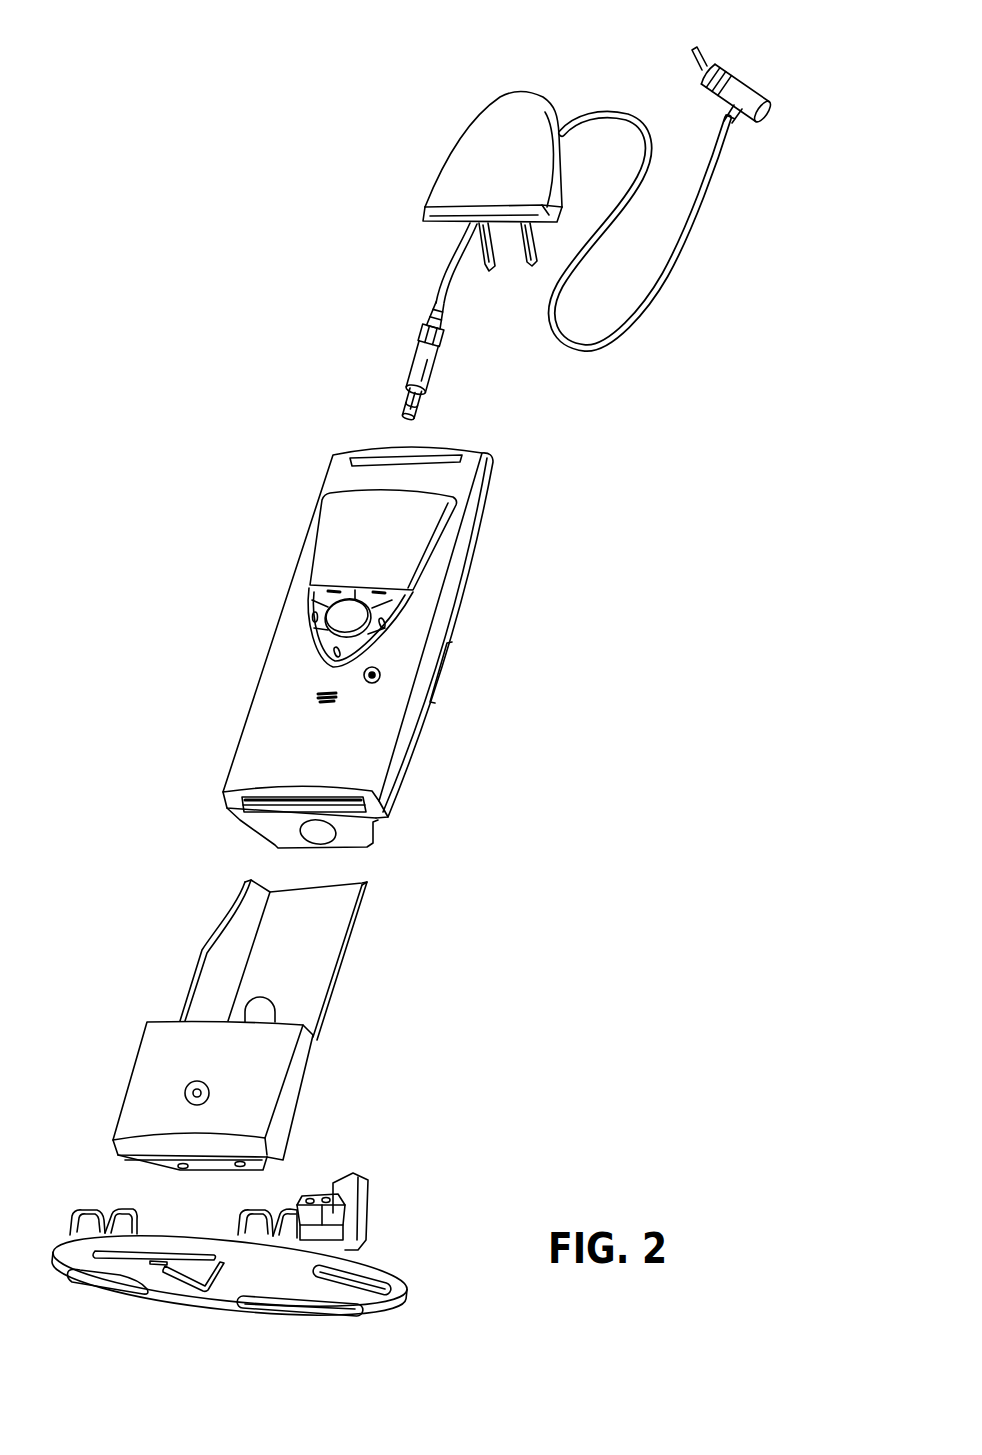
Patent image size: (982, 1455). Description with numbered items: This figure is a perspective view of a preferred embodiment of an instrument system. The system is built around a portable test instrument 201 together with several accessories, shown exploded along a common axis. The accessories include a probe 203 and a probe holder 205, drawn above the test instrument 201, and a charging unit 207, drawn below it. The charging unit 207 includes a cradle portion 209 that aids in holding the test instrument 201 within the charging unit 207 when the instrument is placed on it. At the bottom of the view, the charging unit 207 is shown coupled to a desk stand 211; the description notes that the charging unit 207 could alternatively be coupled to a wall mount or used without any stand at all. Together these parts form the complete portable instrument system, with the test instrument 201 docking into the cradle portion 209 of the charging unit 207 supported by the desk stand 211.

The portable test instrument 201 is at (490, 503).
The probe 203 is at (740, 70).
The probe holder 205 is at (513, 90).
The charging unit 207 is at (270, 1087).
The cradle portion 209 is at (310, 933).
The desk stand 211 is at (387, 1300).